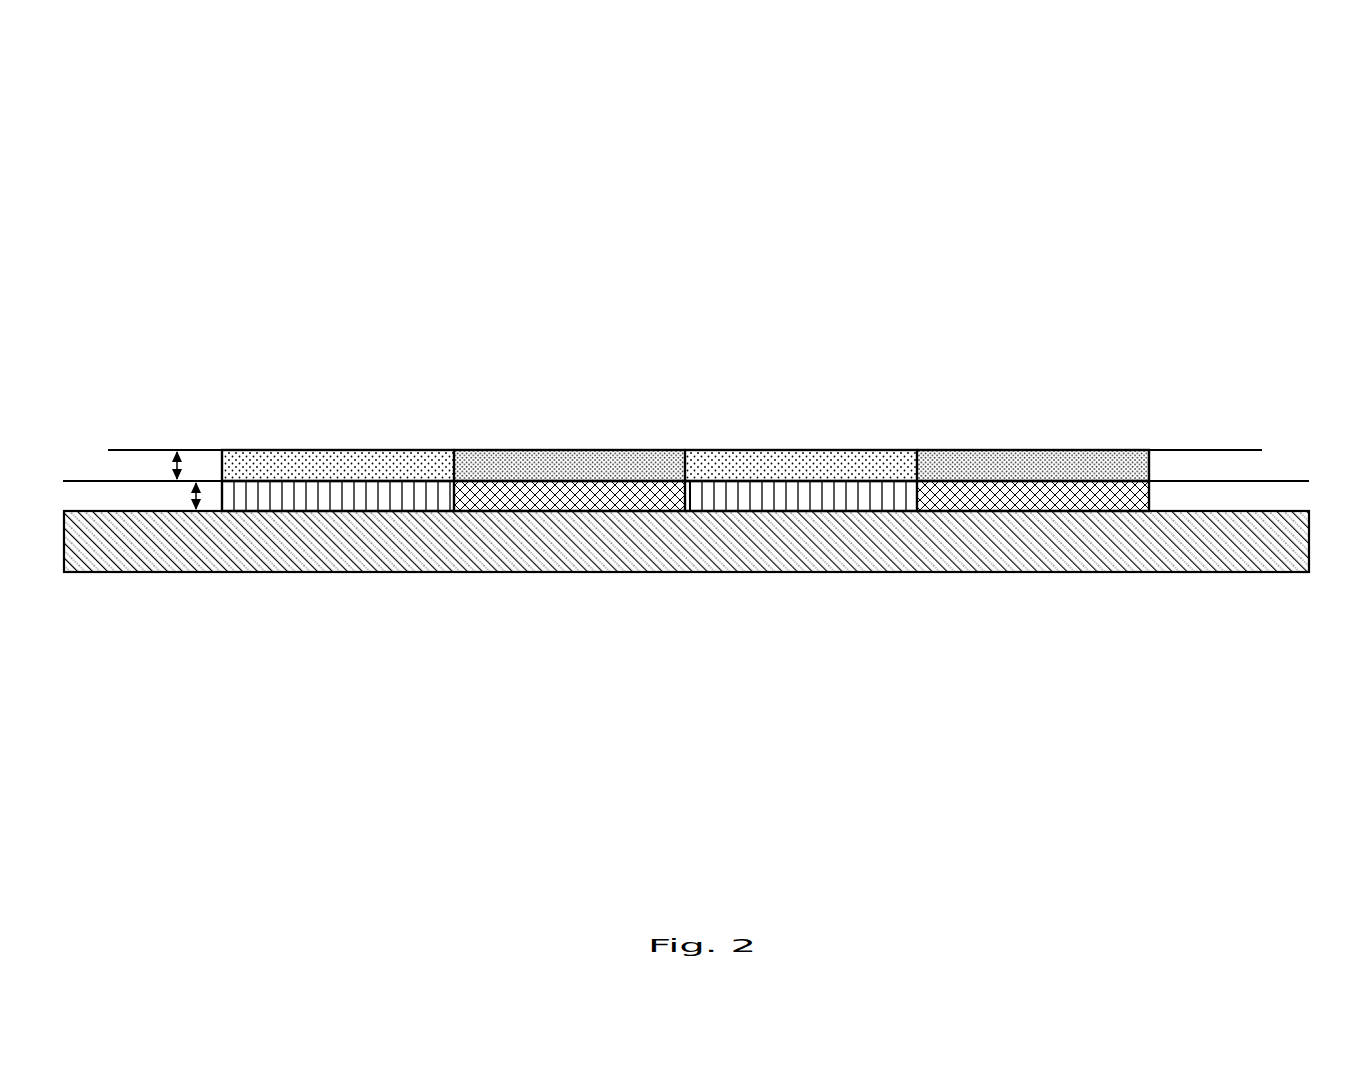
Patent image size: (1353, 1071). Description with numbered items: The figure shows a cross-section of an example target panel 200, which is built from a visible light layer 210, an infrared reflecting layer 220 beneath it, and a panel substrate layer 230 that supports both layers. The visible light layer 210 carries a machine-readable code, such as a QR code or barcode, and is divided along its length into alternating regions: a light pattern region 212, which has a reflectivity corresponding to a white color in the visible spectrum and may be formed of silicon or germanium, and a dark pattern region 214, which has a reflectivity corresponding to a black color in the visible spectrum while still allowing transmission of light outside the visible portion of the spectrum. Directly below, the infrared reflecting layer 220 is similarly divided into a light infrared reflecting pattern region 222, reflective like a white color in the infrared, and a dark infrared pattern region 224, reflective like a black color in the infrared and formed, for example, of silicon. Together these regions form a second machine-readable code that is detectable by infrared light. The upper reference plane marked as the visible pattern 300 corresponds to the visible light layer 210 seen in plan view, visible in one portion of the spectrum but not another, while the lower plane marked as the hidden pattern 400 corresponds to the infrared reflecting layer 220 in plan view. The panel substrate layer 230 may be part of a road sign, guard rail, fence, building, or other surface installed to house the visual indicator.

The target panel 200 is at (1341, 59).
The visible light layer 210 is at (187, 464).
The light pattern region 212 is at (338, 450).
The dark pattern region 214 is at (571, 450).
The infrared reflecting layer 220 is at (205, 497).
The light infrared reflecting pattern region 222 is at (400, 490).
The dark infrared pattern region 224 is at (622, 488).
The panel substrate layer 230 is at (1213, 550).
The visible pattern 300 is at (133, 448).
The hidden pattern 400 is at (88, 479).